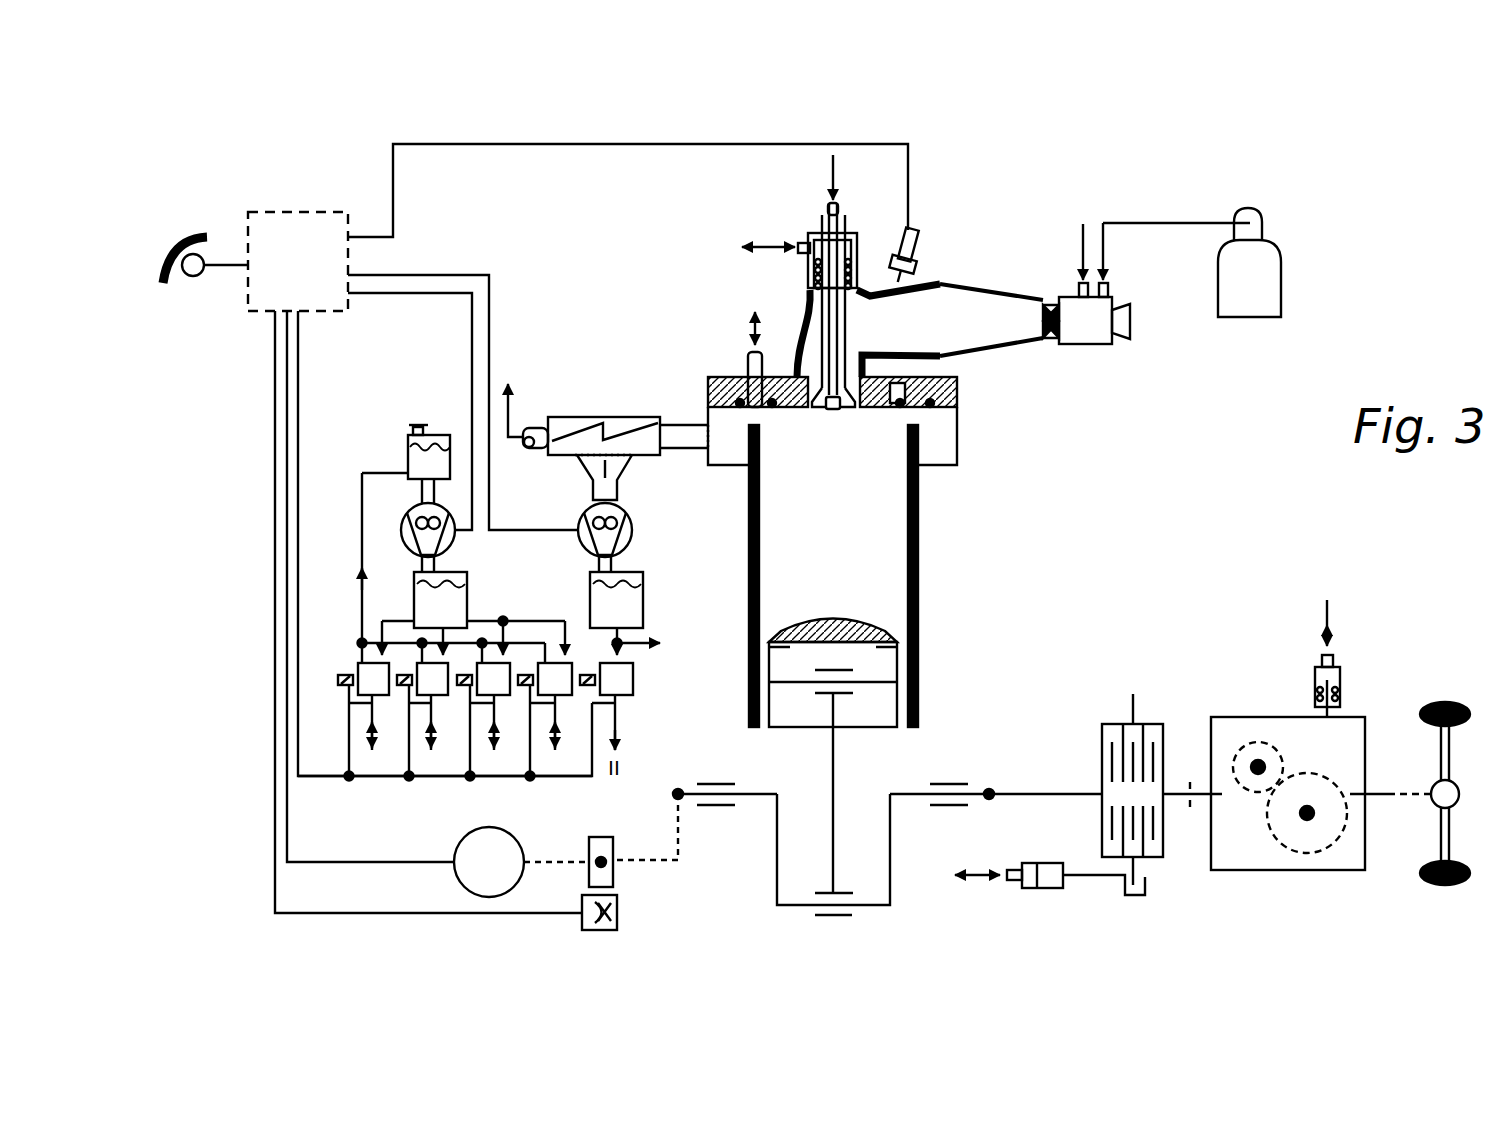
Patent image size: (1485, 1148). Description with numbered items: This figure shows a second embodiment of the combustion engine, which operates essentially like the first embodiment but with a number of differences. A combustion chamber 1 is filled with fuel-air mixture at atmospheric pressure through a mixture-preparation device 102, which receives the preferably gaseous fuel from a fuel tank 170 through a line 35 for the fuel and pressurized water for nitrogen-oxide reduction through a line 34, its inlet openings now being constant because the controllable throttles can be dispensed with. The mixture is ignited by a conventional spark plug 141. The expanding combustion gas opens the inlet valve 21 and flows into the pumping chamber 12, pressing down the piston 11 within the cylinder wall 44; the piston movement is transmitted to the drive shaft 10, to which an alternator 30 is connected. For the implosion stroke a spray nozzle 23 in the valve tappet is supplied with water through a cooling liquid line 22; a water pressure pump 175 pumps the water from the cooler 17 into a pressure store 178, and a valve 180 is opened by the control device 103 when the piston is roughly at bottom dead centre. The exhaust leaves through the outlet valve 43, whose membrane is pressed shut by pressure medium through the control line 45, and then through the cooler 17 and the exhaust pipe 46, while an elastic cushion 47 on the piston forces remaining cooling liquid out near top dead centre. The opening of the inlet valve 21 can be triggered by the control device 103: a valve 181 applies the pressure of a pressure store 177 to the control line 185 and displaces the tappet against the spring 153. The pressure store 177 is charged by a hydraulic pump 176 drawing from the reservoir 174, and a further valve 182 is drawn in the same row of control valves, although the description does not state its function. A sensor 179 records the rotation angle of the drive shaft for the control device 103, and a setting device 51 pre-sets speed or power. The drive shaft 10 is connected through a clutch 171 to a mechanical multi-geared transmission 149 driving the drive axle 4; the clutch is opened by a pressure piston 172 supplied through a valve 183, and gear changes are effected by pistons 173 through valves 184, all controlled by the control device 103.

The combustion chamber 1 is at (957, 308).
The drive axle 4 is at (1440, 763).
The drive shaft 10 is at (893, 902).
The piston 11 is at (877, 705).
The pumping chamber 12 is at (870, 560).
The cooler 17 is at (590, 423).
The inlet valve 21 is at (918, 228).
The cooling liquid line 22 is at (822, 203).
The spray nozzle 23 is at (833, 412).
The alternator 30 is at (476, 897).
The line for pressurized water 34 is at (1077, 281).
The line for the fuel 35 is at (1110, 287).
The outlet valve 43 is at (932, 421).
The cylinder wall 44 is at (920, 557).
The control line 45 is at (745, 362).
The exhaust pipe 46 is at (508, 407).
The elastic cushion 47 is at (885, 633).
The setting device 51 is at (190, 276).
The mixture-preparation device 102 is at (1087, 352).
The control device 103 is at (270, 272).
The spark plug 141 is at (862, 330).
The multi-geared transmission 149 is at (1313, 888).
The spring 153 is at (862, 240).
The fuel tank 170 is at (1250, 225).
The clutch 171 is at (1156, 714).
The pressure piston 172 is at (1052, 890).
The pistons 173 is at (1313, 675).
The reservoir 174 is at (420, 462).
The water pressure pump 175 is at (593, 515).
The hydraulic pump 176 is at (412, 513).
The pressure store 177 is at (433, 603).
The pressure store 178 is at (630, 603).
The sensor 179 is at (617, 920).
The valve 180 is at (640, 700).
The valve 181 is at (575, 700).
The solenoid valve 182 is at (482, 700).
The valve 183 is at (412, 700).
The valves 184 is at (373, 673).
The control line 185 is at (800, 245).